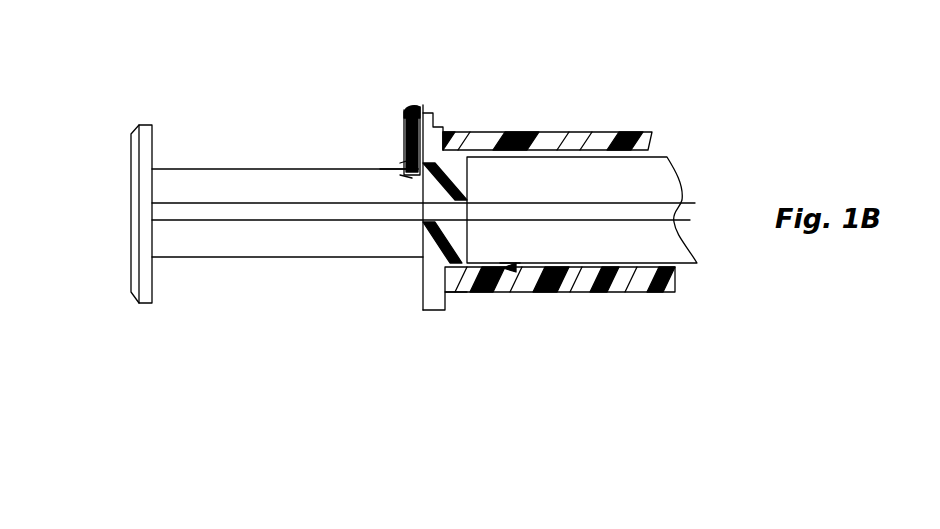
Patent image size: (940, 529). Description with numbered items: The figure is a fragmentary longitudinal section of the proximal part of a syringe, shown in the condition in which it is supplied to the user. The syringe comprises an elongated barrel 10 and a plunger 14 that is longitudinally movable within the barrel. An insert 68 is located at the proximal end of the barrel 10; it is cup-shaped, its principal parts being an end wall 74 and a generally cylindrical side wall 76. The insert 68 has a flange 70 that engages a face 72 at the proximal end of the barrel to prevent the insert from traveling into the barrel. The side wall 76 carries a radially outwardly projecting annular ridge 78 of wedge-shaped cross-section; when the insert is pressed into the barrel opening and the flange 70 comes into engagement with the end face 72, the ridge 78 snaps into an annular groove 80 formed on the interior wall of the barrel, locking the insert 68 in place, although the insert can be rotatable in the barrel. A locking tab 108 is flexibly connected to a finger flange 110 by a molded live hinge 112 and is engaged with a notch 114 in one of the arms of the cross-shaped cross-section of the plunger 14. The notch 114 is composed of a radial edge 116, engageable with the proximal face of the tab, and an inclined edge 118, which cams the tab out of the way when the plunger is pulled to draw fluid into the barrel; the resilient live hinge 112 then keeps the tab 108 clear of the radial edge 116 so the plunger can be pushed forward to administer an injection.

The barrel 10 is at (610, 132).
The plunger 14 is at (250, 258).
The insert 68 is at (420, 280).
The flange 70 is at (409, 291).
The face 72 is at (410, 310).
The end wall 74 is at (413, 197).
The side wall 76 is at (470, 154).
The annular ridge 78 is at (582, 272).
The annular groove 80 is at (580, 275).
The locking tab 108 is at (405, 130).
The finger flange 110 is at (445, 117).
The live hinge 112 is at (425, 105).
The notch 114 is at (398, 181).
The radial edge 116 is at (400, 177).
The inclined edge 118 is at (403, 170).